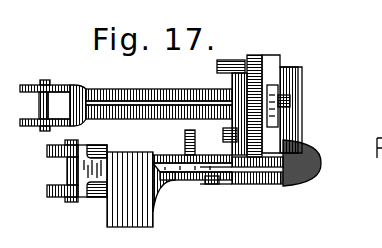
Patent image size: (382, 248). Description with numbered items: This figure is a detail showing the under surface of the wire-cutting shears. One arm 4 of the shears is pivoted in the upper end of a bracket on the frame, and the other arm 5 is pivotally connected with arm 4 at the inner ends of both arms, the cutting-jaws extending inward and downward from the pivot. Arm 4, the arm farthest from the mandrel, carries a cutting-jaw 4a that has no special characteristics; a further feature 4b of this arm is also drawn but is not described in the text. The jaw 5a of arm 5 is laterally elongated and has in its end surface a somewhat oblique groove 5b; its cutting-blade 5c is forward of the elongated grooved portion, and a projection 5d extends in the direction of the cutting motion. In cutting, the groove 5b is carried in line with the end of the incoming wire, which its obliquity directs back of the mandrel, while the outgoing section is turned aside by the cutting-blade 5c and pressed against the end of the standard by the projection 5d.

The arm of the shears 5 is at (126, 98).
The jaw of arm 5 5a is at (278, 63).
The groove 5b is at (257, 55).
The cutting-blade 5c is at (240, 145).
The projection 5d is at (221, 60).
The arm of the wire-cutting shears 4 is at (166, 196).
The cutting-jaw of arm 4 4a is at (214, 185).
The key 4b is at (185, 138).